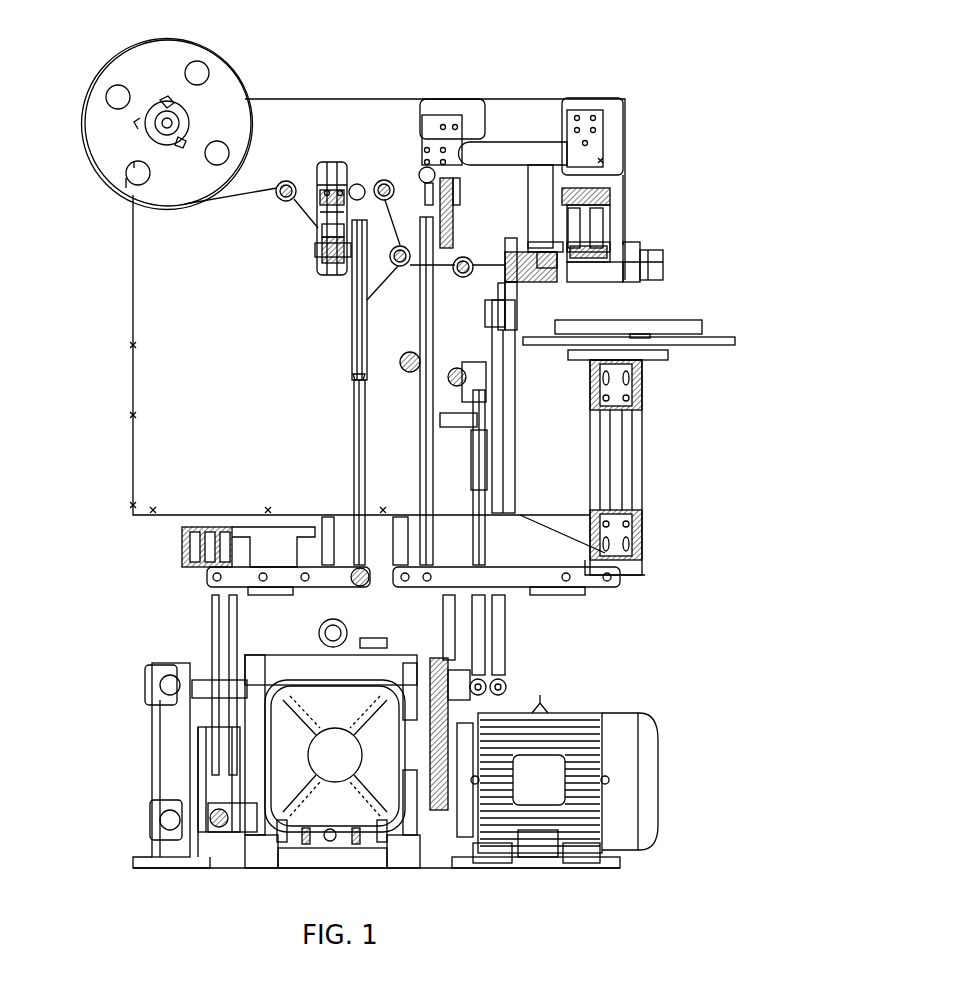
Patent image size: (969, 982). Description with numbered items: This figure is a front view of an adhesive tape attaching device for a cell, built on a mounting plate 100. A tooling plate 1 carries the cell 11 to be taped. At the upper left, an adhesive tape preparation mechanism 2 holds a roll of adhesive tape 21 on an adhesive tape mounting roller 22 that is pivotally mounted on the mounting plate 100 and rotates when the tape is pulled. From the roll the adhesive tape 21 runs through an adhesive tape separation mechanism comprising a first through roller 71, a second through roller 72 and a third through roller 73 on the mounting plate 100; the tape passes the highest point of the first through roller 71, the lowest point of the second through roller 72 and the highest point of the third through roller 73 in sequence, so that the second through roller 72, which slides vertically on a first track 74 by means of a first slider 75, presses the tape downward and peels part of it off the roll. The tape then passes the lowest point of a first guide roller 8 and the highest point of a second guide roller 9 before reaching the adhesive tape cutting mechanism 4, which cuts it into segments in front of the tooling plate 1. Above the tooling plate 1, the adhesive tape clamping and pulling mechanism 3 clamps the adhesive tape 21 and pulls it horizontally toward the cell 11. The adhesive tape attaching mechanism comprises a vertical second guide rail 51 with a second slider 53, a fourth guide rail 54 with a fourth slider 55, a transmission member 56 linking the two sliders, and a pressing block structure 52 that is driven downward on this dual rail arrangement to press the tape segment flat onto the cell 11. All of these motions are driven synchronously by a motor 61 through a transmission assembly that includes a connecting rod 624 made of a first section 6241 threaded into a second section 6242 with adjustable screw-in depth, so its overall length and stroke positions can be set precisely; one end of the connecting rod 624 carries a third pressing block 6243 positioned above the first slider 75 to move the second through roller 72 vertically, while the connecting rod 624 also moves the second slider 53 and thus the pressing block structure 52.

The mounting plate 100 is at (177, 467).
The tooling plate 1 is at (717, 332).
The cell 11 is at (672, 318).
The adhesive tape preparation mechanism 2 is at (230, 82).
The adhesive tape 21 is at (247, 183).
The adhesive tape mounting roller 22 is at (170, 95).
The adhesive tape clamping and pulling mechanism 3 is at (663, 248).
The adhesive tape cutting mechanism 4 is at (537, 300).
The second guide rail 51 is at (590, 100).
The pressing block structure 52 is at (625, 203).
The second slider 53 is at (600, 125).
The fourth guide rail 54 is at (470, 148).
The fourth slider 55 is at (450, 120).
The transmission member 56 is at (520, 140).
The motor 61 is at (627, 748).
The connecting rod 624 is at (503, 654).
The first section 6241 is at (485, 432).
The second section 6242 is at (600, 540).
The third pressing block 6243 is at (322, 233).
The first through roller 71 is at (279, 194).
The second through roller 72 is at (325, 280).
The third through roller 73 is at (390, 165).
The first track 74 is at (331, 162).
The first slider 75 is at (318, 258).
The first guide roller 8 is at (393, 268).
The second guide roller 9 is at (455, 275).